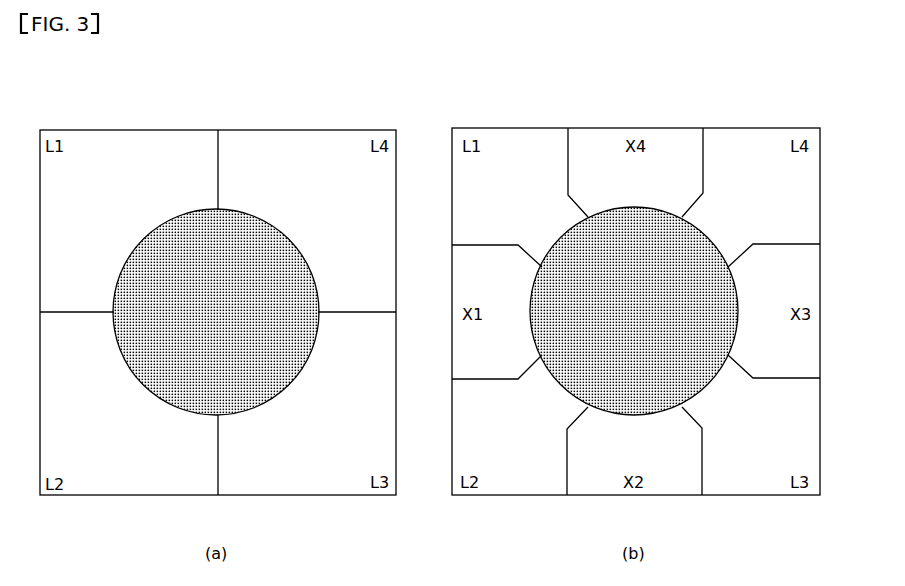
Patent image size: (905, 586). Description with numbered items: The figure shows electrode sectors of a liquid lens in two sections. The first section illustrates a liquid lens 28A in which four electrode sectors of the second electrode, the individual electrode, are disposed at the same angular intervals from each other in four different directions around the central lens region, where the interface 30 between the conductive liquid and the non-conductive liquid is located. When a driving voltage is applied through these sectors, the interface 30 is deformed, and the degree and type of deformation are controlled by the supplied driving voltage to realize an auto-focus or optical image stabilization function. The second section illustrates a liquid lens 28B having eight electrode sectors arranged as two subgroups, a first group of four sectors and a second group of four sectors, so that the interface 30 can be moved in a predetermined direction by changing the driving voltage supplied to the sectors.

The interface 30 is at (148, 240).
The four-quadrant photodetector pattern 28A is at (218, 496).
The eight-segment photodetector pattern 28B is at (635, 496).